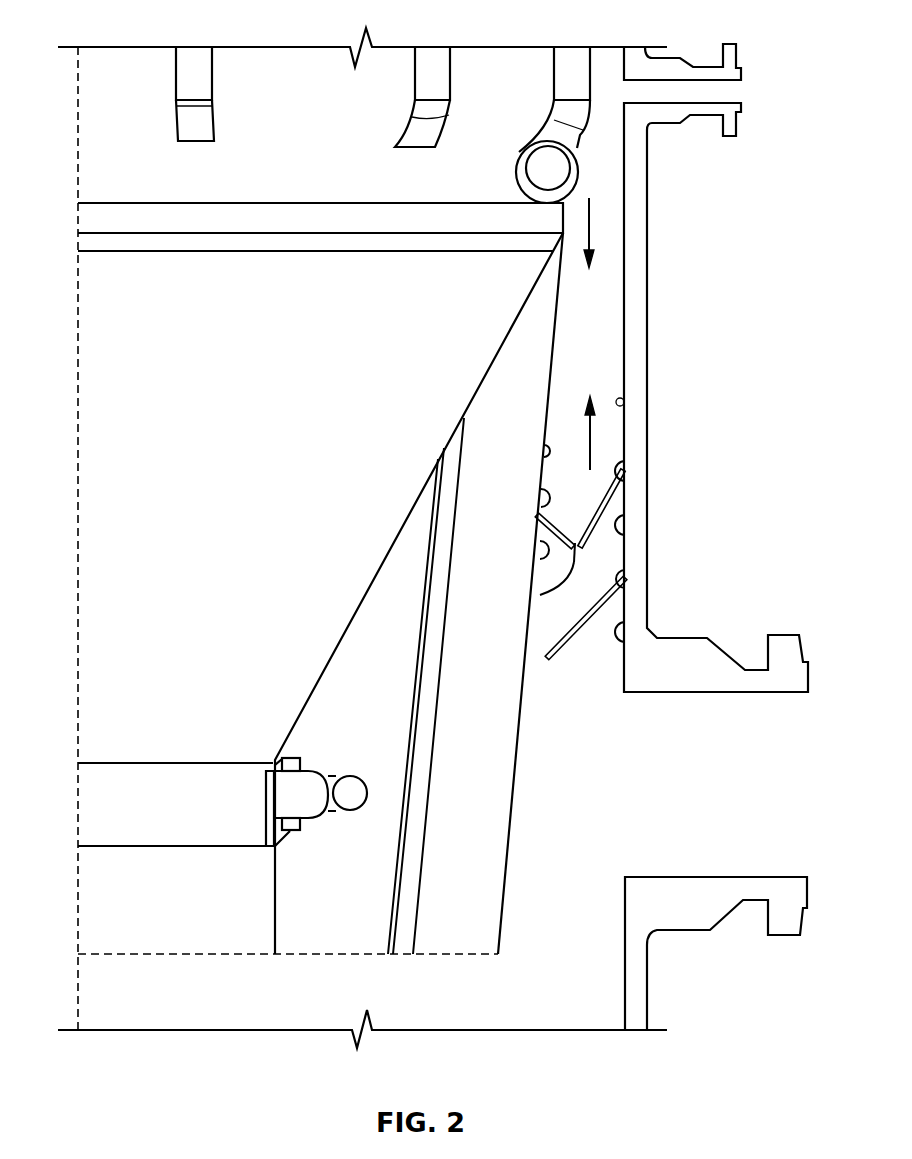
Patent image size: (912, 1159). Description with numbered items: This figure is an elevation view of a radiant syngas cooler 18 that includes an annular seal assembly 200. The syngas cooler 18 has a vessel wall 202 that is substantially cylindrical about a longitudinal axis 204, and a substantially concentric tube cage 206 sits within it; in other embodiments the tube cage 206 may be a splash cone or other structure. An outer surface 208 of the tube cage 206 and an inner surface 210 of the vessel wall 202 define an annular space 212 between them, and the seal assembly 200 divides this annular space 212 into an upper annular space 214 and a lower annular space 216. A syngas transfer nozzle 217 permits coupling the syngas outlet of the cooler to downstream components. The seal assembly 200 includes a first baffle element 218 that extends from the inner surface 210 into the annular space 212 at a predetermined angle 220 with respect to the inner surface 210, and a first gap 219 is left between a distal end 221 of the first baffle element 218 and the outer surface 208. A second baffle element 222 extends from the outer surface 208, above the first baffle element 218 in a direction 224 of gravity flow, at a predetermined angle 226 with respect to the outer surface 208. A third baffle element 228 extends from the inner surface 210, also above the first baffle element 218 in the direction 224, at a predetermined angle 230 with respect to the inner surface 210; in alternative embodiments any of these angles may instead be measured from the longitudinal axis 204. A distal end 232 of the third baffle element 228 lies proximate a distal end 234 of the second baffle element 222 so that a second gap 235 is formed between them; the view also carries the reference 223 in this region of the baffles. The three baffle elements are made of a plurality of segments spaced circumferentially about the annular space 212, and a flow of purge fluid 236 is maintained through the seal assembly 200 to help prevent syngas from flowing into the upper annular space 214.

The radiant syngas cooler 18 is at (770, 40).
The annular seal assembly 200 is at (672, 504).
The vessel wall 202 is at (637, 362).
The longitudinal axis 204 is at (78, 137).
The tube cage 206 is at (512, 753).
The outer surface 208 is at (542, 452).
The inner surface 210 is at (624, 401).
The annular space 212 is at (605, 347).
The upper annular space 214 is at (555, 593).
The lower annular space 216 is at (574, 740).
The syngas transfer nozzle 217 is at (797, 682).
The first baffle element 218 is at (613, 573).
The first gap 219 is at (539, 652).
The predetermined angle 220 is at (625, 643).
The distal end 221 is at (571, 642).
The second baffle element 222 is at (540, 495).
The intermediate region 223 is at (558, 605).
The direction of gravity flow 224 is at (585, 438).
The predetermined angle 226 is at (540, 558).
The third baffle element 228 is at (617, 463).
The predetermined angle 230 is at (613, 521).
The distal end 232 is at (585, 543).
The distal end 234 is at (572, 540).
The second gap 235 is at (540, 594).
The flow of purge fluid 236 is at (592, 226).